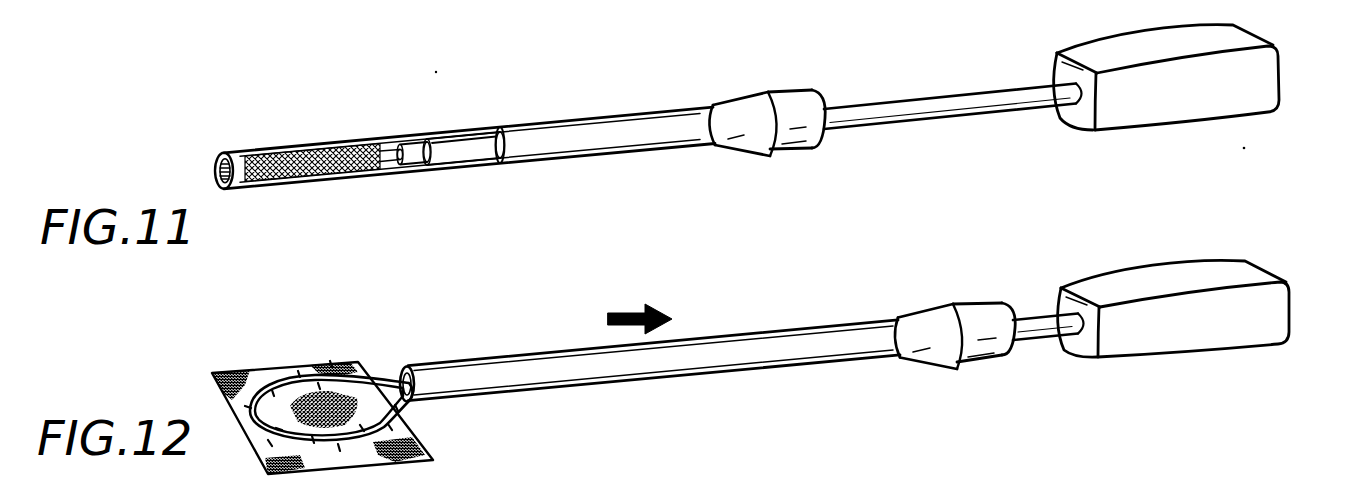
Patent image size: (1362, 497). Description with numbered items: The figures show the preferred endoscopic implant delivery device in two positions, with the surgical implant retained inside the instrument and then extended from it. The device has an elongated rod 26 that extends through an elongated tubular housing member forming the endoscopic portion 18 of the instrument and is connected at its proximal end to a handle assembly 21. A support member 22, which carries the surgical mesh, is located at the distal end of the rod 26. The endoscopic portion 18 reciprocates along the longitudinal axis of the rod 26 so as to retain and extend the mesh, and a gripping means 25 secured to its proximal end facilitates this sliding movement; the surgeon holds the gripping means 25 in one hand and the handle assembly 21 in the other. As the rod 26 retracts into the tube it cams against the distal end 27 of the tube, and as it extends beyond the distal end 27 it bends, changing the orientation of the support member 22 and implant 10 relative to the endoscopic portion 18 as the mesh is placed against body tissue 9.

In FIG. 12, the tissue sheet / membrane 9 is at (222, 374).
In FIG. 12, the tissue specimen (polyp) 10 is at (289, 362).
In FIG. 11, the endoscopic portion 18 is at (589, 126).
In FIG. 12, the endoscopic portion 18 is at (783, 350).
In FIG. 11, the handle assembly 21 is at (1262, 81).
In FIG. 12, the handle assembly 21 is at (1172, 283).
In FIG. 12, the support member 22 is at (373, 378).
In FIG. 11, the gripping means 25 is at (785, 100).
In FIG. 12, the gripping means 25 is at (973, 313).
In FIG. 11, the elongated rod 26 is at (916, 108).
In FIG. 12, the elongated rod 26 is at (1040, 331).
In FIG. 12, the distal end of the tube 27 is at (396, 376).